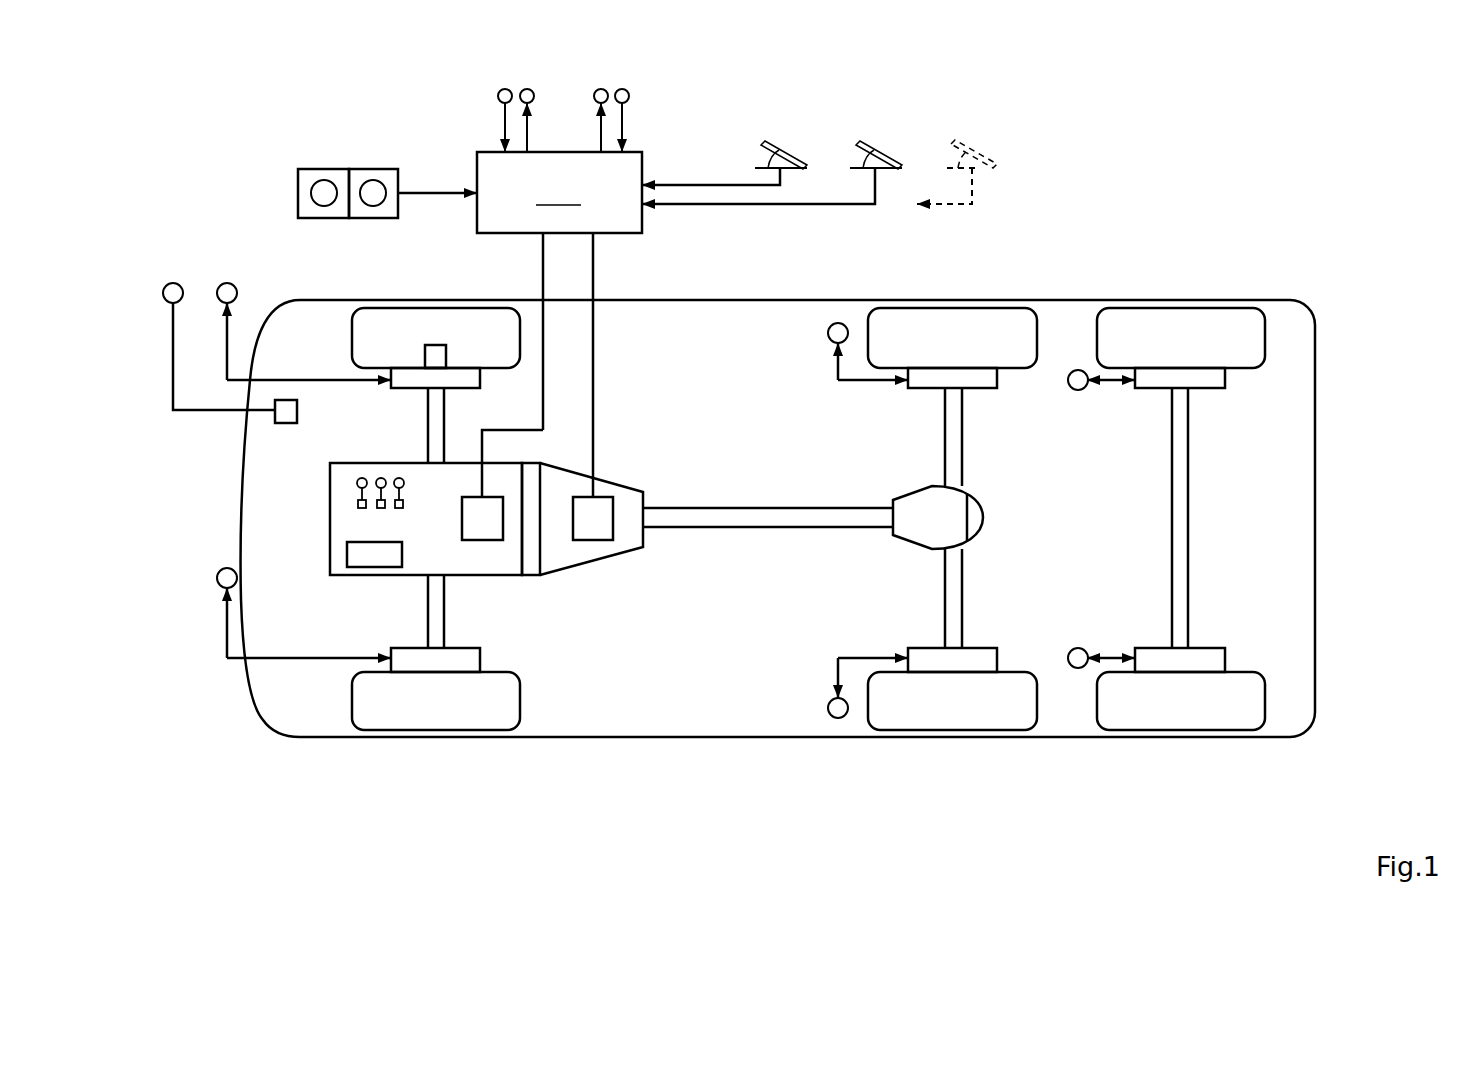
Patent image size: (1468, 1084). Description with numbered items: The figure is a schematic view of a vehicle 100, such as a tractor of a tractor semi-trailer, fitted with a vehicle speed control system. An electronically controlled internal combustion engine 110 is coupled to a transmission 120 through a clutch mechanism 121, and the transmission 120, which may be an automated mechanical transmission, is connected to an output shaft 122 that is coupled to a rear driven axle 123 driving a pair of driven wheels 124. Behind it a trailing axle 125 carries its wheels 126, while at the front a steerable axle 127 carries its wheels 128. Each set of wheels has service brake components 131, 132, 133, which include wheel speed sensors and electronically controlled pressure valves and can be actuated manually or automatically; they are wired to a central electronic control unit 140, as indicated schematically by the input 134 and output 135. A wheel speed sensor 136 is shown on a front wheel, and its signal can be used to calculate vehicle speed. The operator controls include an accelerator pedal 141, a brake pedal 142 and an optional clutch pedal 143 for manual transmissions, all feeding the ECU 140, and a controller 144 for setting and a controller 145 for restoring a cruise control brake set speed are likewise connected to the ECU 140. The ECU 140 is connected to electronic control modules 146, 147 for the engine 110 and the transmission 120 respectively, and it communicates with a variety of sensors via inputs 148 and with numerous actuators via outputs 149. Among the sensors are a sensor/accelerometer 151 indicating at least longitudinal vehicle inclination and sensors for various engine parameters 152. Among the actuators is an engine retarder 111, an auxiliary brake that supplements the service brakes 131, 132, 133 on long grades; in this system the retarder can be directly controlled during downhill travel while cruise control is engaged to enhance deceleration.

The vehicle 100 is at (628, 760).
The internal combustion engine 110 is at (327, 567).
The engine retarder 111 is at (358, 554).
The transmission 120 is at (610, 565).
The clutch mechanism 121 is at (533, 583).
The output shaft 122 is at (710, 533).
The driven axle 123 is at (968, 582).
The driven wheels 124 is at (917, 722).
The trailing axle 125 is at (1192, 515).
The wheels 126 is at (1140, 720).
The steerable axle 127 is at (423, 617).
The wheels 128 is at (393, 720).
The service brake components 131 is at (963, 675).
The service brake components 132 is at (1187, 677).
The service brake components 133 is at (447, 675).
The input 134 is at (503, 88).
The output 135 is at (527, 88).
The wheel speed sensor 136 is at (420, 342).
The central electronic control unit 140 is at (559, 324).
The accelerator pedal 141 is at (783, 150).
The brake pedal 142 is at (877, 150).
The clutch pedal 143 is at (977, 145).
The controller 144 is at (322, 163).
The controller 145 is at (373, 163).
The electronic control module 146 is at (488, 518).
The electronic control module 147 is at (600, 517).
The inputs 148 is at (653, 165).
The outputs 149 is at (601, 88).
The sensor/accelerometer 151 is at (268, 423).
The sensors for engine parameters 152 is at (345, 500).